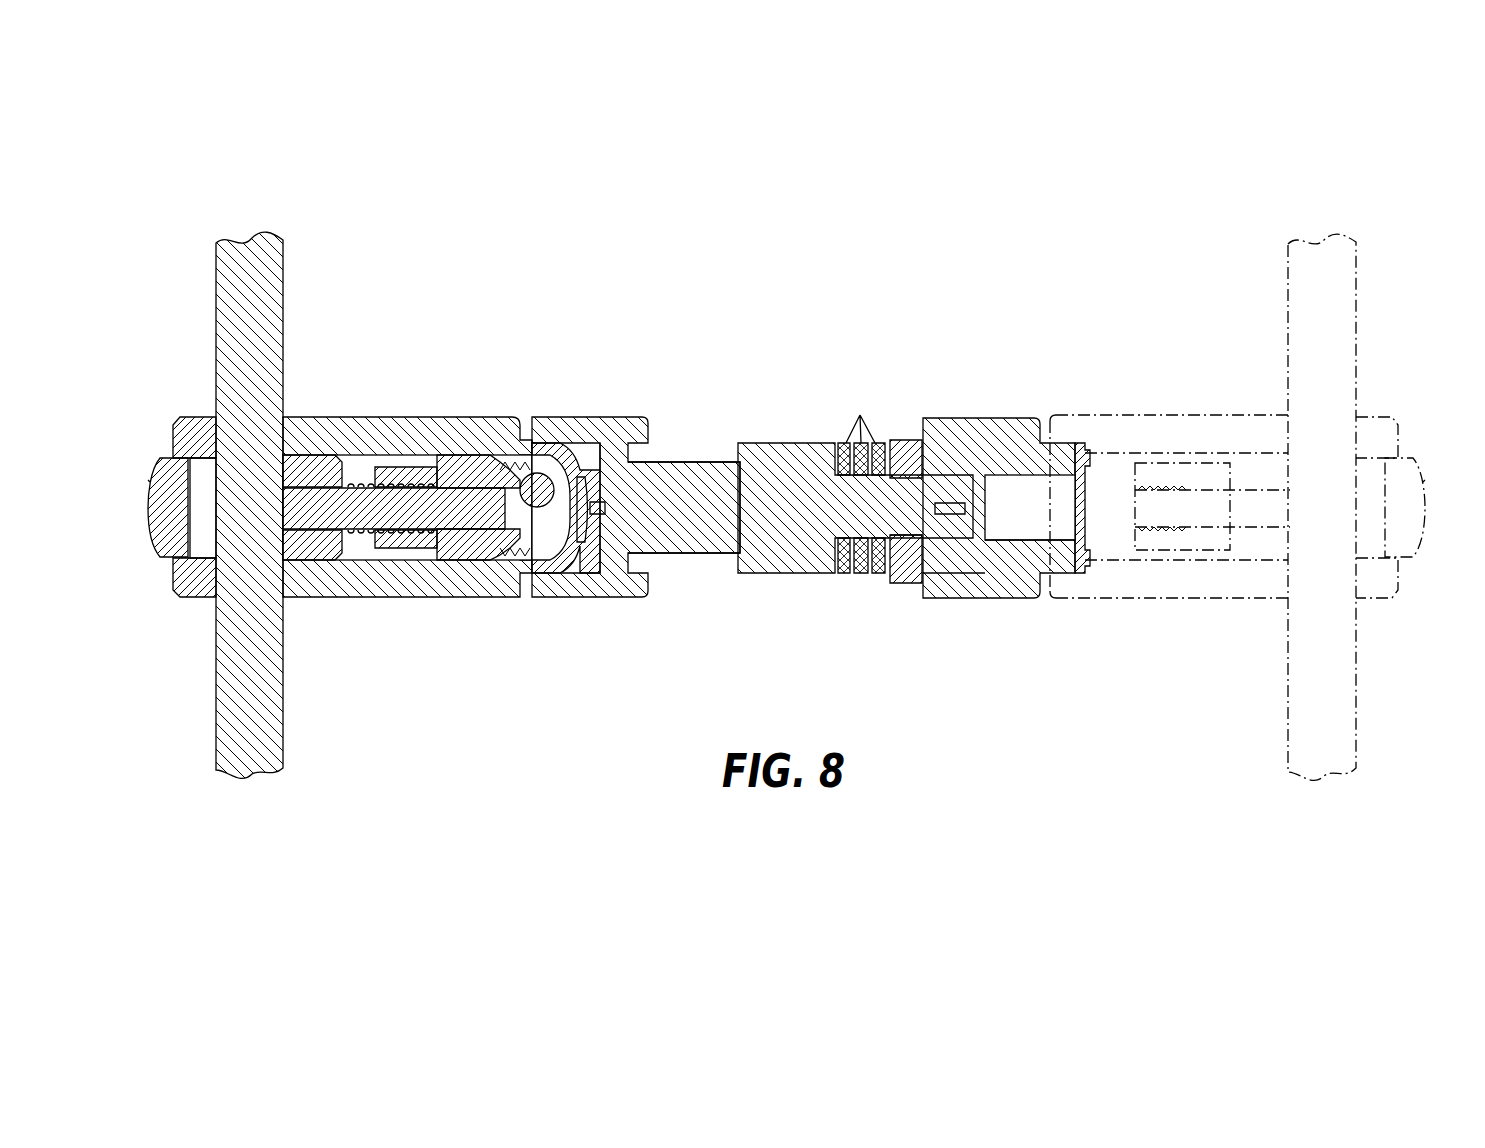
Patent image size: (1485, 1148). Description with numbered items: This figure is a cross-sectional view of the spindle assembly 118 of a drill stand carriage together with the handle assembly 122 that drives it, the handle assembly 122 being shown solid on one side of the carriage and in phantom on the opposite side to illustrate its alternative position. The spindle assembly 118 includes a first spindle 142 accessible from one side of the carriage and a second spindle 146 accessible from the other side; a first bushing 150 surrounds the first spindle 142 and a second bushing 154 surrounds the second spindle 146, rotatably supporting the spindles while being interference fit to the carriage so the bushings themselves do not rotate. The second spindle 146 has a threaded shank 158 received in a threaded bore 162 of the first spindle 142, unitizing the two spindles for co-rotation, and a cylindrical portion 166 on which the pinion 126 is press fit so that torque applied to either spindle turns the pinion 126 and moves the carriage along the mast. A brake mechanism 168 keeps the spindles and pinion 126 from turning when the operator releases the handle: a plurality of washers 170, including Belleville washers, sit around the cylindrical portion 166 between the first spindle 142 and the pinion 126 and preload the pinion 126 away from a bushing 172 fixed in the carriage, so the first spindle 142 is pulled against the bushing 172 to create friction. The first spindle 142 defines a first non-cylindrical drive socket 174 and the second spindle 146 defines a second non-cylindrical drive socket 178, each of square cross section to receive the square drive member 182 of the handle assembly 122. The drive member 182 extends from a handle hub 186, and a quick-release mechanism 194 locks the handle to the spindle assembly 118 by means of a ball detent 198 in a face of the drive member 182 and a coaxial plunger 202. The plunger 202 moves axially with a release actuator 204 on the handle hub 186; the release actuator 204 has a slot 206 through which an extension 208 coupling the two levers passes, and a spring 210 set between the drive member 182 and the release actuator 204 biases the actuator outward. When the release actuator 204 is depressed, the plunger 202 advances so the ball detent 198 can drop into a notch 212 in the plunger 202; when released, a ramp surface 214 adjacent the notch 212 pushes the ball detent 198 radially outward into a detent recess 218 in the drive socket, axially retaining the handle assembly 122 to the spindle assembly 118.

The spindle assembly 118 is at (605, 285).
The handle assembly 122 is at (187, 318).
The pinion 126 is at (763, 443).
The first spindle 142 is at (968, 450).
The second spindle 146 is at (600, 600).
The first bushing 150 is at (985, 600).
The second bushing 154 is at (620, 418).
The threaded shank 158 is at (876, 578).
The threaded bore 162 is at (980, 575).
The cylindrical portion 166 is at (765, 560).
The brake mechanism 168 is at (905, 440).
The washers 170 is at (860, 415).
The bushing 172 is at (900, 583).
The first non-cylindrical drive socket 174 is at (1020, 600).
The second non-cylindrical drive socket 178 is at (590, 425).
The drive member 182 is at (560, 600).
The handle hub 186 is at (352, 417).
The quick-release mechanism 194 is at (145, 553).
The ball detent 198 is at (555, 425).
The plunger 202 is at (372, 530).
The release actuator 204 is at (158, 472).
The slot 206 is at (212, 468).
The extension 208 is at (245, 512).
The spring 210 is at (415, 548).
The notch 212 is at (480, 420).
The ramp surface 214 is at (500, 590).
The detent recess 218 is at (533, 425).